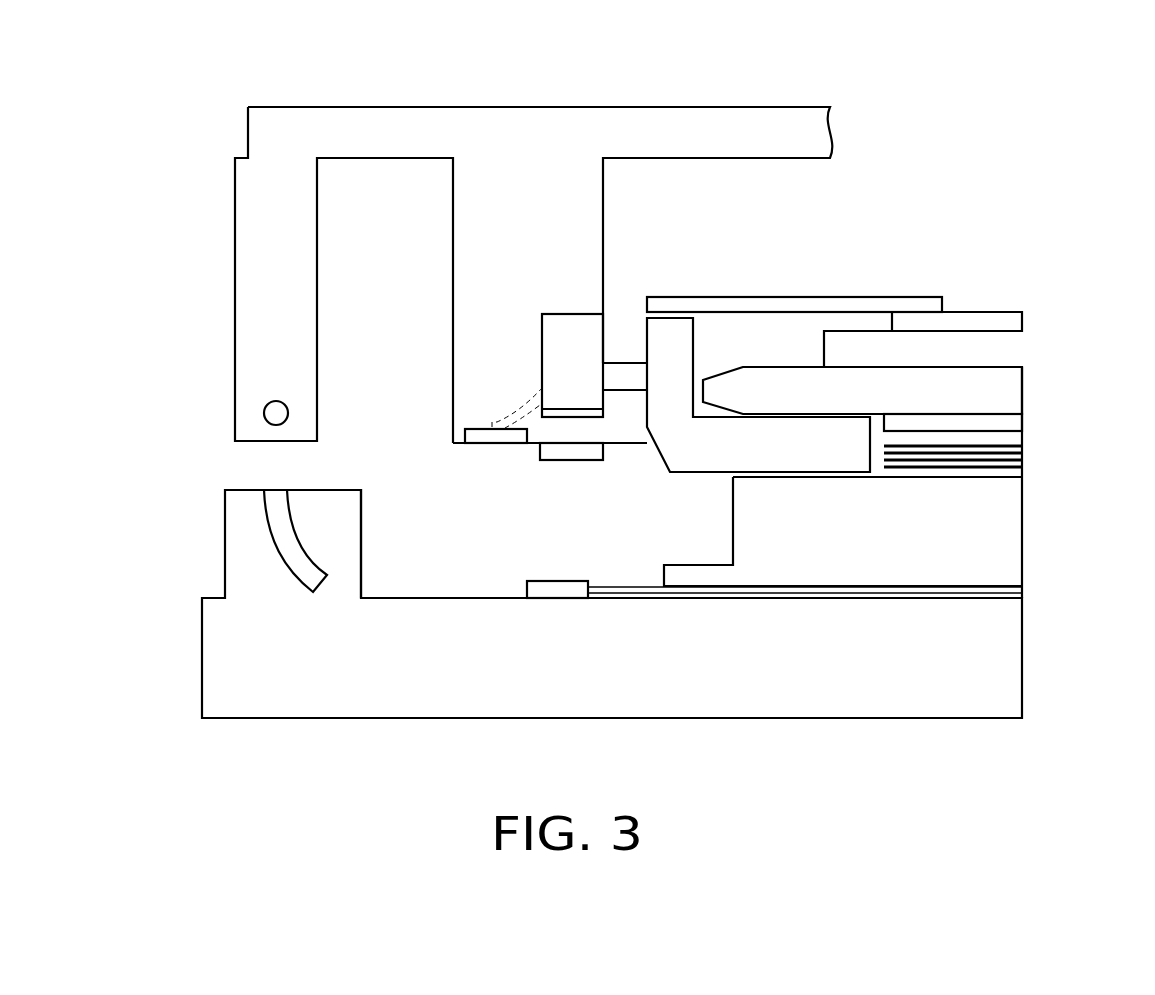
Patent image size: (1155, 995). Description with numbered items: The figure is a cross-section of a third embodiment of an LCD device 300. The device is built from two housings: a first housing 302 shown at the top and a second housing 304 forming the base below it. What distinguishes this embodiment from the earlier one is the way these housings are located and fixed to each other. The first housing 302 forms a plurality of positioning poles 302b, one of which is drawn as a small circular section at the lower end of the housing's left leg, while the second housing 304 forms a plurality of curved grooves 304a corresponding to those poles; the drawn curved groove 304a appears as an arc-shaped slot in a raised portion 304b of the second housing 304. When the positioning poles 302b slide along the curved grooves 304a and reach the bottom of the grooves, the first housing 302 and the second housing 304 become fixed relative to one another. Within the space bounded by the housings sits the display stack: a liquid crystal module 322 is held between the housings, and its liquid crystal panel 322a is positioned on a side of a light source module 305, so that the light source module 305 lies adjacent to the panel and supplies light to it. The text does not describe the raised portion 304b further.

The LCD device 300 is at (740, 72).
The first housing 302 is at (280, 115).
The positioning pole 302b is at (268, 413).
The light source module 305 is at (570, 333).
The liquid crystal module 322 is at (880, 268).
The liquid crystal panel 322a is at (1008, 393).
The second housing 304 is at (213, 660).
The curved groove 304a is at (277, 523).
The protrusion 304b is at (237, 555).